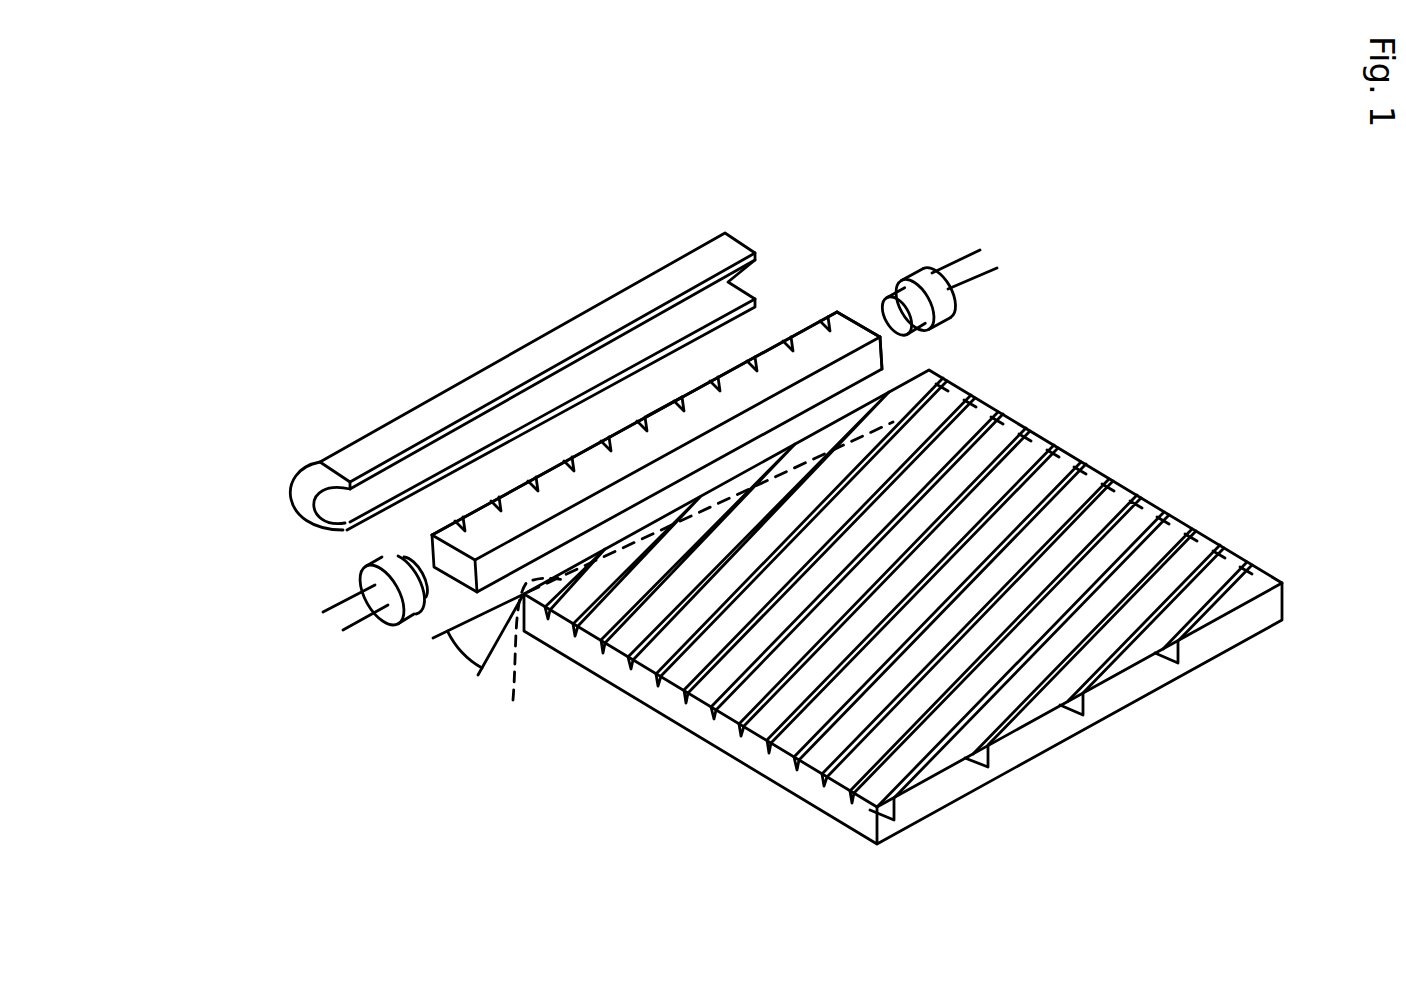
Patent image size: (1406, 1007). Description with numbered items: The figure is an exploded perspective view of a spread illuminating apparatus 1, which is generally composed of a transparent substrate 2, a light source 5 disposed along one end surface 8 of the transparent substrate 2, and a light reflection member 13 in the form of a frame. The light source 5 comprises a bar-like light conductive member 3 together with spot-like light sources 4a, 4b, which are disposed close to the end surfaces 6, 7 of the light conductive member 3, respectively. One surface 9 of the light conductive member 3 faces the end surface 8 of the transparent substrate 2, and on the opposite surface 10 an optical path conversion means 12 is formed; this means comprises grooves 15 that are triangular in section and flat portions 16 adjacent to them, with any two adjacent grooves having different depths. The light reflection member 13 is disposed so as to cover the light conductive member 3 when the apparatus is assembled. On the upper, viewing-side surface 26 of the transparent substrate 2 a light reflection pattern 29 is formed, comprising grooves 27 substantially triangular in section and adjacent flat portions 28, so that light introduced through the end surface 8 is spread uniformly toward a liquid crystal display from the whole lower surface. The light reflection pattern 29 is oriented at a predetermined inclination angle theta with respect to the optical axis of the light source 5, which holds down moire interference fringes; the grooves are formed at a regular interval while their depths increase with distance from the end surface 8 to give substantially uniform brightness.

The spread illuminating apparatus 1 is at (829, 178).
The transparent substrate 2 is at (1068, 738).
The light conductive member 3 is at (436, 536).
The spot-like light source 4a is at (365, 558).
The spot-like light source 4b is at (937, 262).
The light source 5 is at (205, 510).
The end surface 6 is at (453, 568).
The end surface 7 is at (858, 320).
The end surface 8 is at (531, 662).
The surface 9 is at (884, 352).
The surface 10 is at (806, 328).
The optical path conversion means 12 is at (608, 170).
The light reflection member 13 is at (503, 352).
The grooves 15 is at (643, 427).
The flat portions 16 is at (662, 407).
The upper surface 26 is at (1078, 537).
The grooves 27 is at (1152, 522).
The flat portions 28 is at (1174, 532).
The light reflection pattern 29 is at (1286, 444).